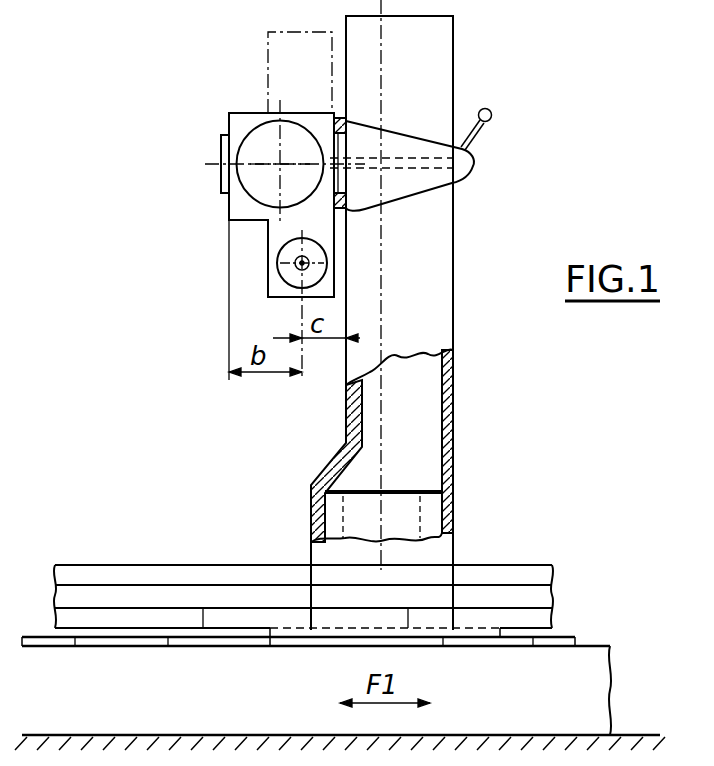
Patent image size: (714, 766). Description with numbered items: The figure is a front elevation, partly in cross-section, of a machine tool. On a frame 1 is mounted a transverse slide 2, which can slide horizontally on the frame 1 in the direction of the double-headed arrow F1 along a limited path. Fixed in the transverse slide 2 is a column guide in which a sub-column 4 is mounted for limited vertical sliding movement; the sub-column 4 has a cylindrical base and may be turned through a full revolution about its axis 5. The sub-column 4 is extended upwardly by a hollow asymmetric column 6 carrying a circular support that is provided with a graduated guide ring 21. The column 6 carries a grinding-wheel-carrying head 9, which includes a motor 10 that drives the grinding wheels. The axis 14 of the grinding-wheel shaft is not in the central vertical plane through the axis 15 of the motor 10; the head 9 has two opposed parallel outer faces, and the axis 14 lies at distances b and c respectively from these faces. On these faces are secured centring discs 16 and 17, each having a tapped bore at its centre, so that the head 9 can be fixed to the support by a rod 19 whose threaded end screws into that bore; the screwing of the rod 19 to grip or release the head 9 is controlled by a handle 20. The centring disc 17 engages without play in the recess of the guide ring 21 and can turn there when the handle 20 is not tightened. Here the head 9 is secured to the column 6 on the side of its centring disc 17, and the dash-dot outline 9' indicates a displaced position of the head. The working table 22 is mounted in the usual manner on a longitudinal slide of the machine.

The frame 1 is at (634, 734).
The transverse slide 2 is at (587, 668).
The sub-column 4 is at (330, 558).
The axis 5 is at (381, 50).
The hollow asymmetric column 6 is at (452, 422).
The grinding-wheel-carrying head 9 is at (263, 179).
The head displaced position 9' is at (274, 60).
The motor 10 is at (272, 190).
The axis of the shaft carrying grinding wheels 14 is at (300, 262).
The axis of motor 15 is at (276, 167).
The centring disc 16 is at (222, 147).
The centring disc 17 is at (338, 178).
The rod 19 is at (422, 162).
The handle 20 is at (481, 125).
The graduated guide ring 21 is at (343, 118).
The working table 22 is at (502, 578).